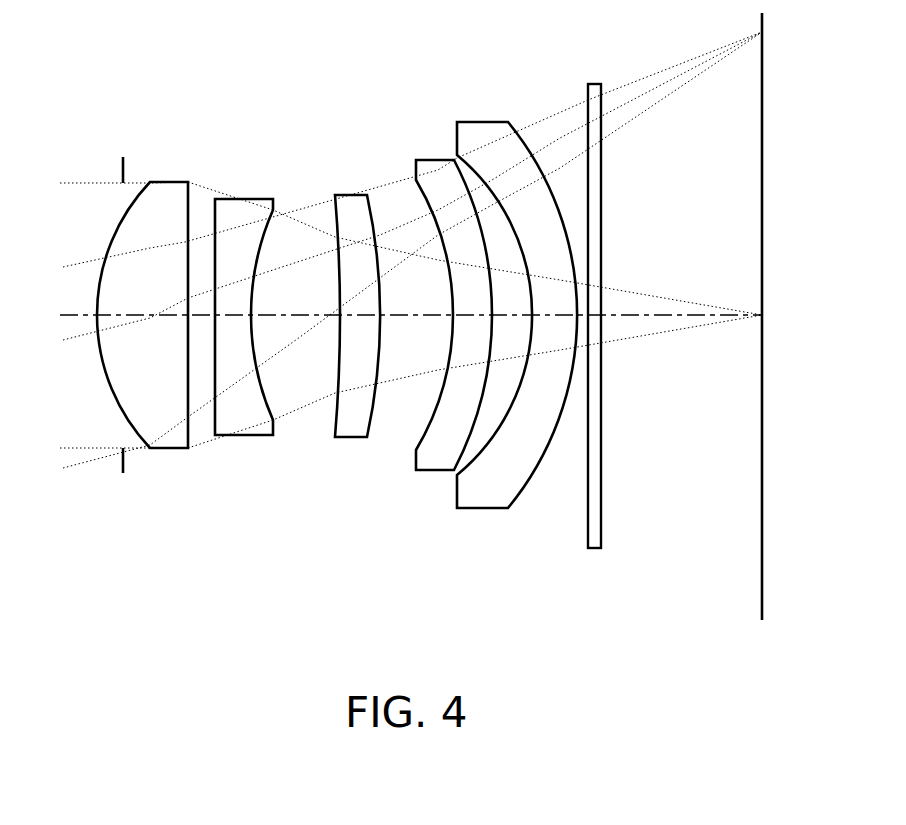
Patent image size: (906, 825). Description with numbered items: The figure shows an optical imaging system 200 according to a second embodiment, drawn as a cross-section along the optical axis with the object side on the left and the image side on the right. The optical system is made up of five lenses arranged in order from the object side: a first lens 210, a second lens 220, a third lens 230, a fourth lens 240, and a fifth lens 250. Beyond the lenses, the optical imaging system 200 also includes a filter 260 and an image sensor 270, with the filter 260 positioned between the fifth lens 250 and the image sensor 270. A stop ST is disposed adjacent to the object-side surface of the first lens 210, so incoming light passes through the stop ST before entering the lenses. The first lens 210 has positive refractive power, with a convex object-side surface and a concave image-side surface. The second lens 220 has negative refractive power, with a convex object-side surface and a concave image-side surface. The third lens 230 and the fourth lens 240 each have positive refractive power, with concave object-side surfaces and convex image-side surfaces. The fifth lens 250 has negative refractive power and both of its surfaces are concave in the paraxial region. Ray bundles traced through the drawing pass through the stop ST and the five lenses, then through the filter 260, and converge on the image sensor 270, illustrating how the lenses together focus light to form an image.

The stop ST is at (122, 474).
The optical imaging system 200 is at (249, 136).
The first lens 210 is at (165, 449).
The second lens 220 is at (243, 436).
The third lens 230 is at (351, 438).
The fourth lens 240 is at (435, 471).
The fifth lens 250 is at (488, 509).
The filter 260 is at (595, 549).
The image sensor 270 is at (760, 582).